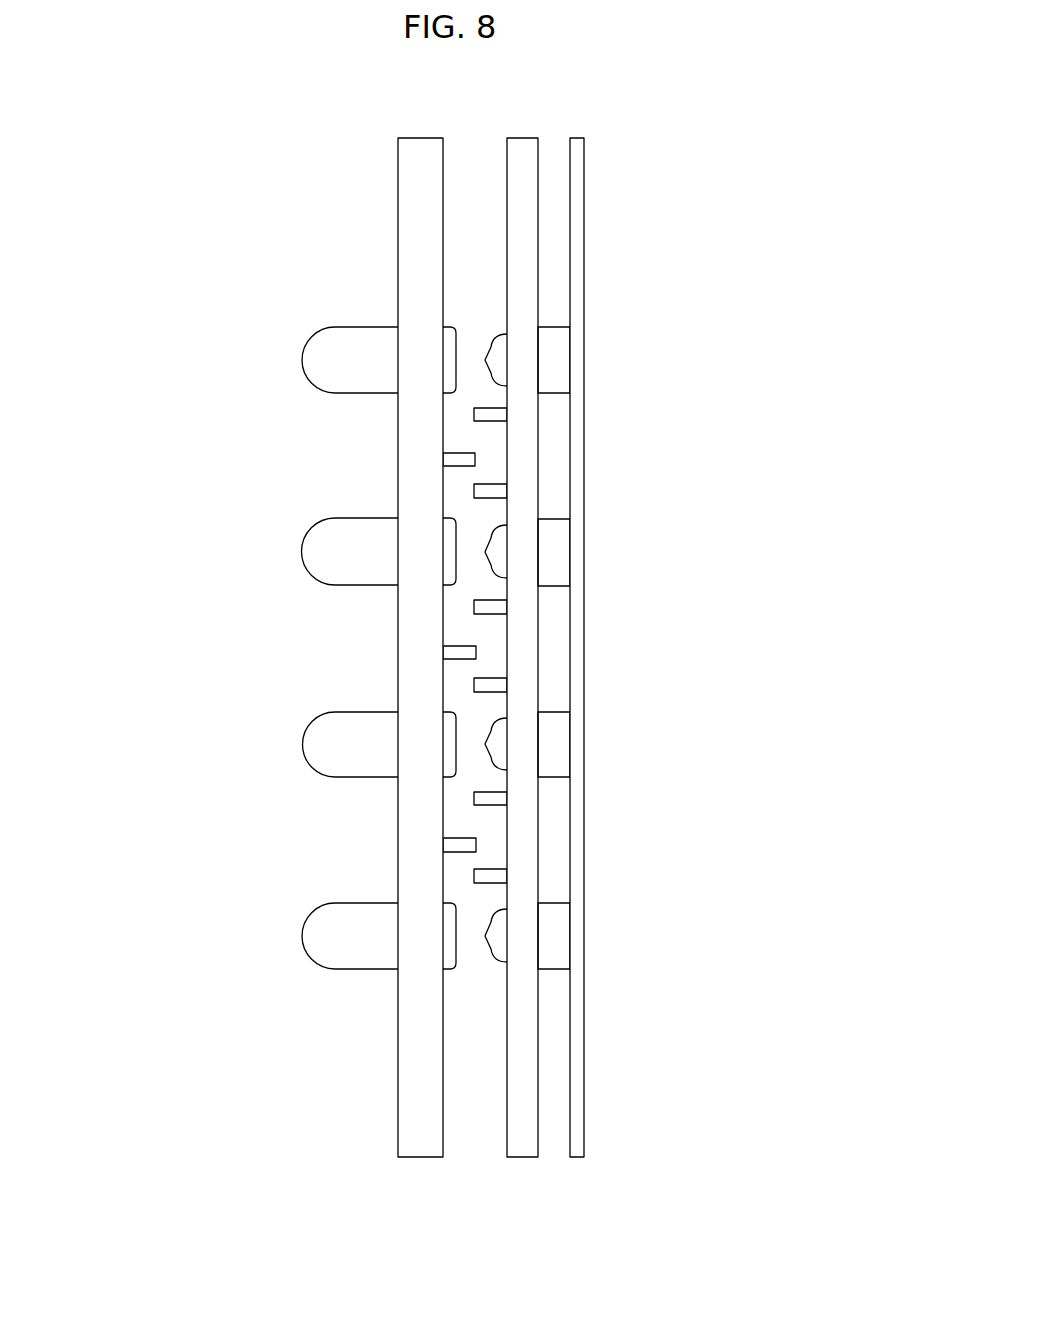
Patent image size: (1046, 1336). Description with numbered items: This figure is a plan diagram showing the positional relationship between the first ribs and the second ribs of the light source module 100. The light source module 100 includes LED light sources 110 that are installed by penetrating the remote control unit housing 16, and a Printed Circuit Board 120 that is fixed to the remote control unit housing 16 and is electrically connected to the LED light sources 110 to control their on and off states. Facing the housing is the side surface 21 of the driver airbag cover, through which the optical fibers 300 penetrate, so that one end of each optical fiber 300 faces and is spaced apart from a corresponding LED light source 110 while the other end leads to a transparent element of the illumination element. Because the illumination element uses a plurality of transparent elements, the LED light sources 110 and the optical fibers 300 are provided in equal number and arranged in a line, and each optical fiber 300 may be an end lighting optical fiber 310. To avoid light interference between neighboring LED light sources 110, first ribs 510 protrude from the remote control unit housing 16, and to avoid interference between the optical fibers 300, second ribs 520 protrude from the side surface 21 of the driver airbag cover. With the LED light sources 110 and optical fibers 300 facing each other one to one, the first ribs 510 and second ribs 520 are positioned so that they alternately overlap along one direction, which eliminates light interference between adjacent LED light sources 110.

The optical fiber 300 is at (261, 648).
The end lighting optical fiber 310 is at (318, 358).
The first rib 510 is at (482, 415).
The second rib 520 is at (452, 459).
The side surface 21 is at (417, 1147).
The remote control unit housing 16 is at (523, 1147).
The LED light source 110 is at (557, 372).
The Printed Circuit Board (PCB) 120 is at (585, 1090).
The light source module 100 is at (661, 700).